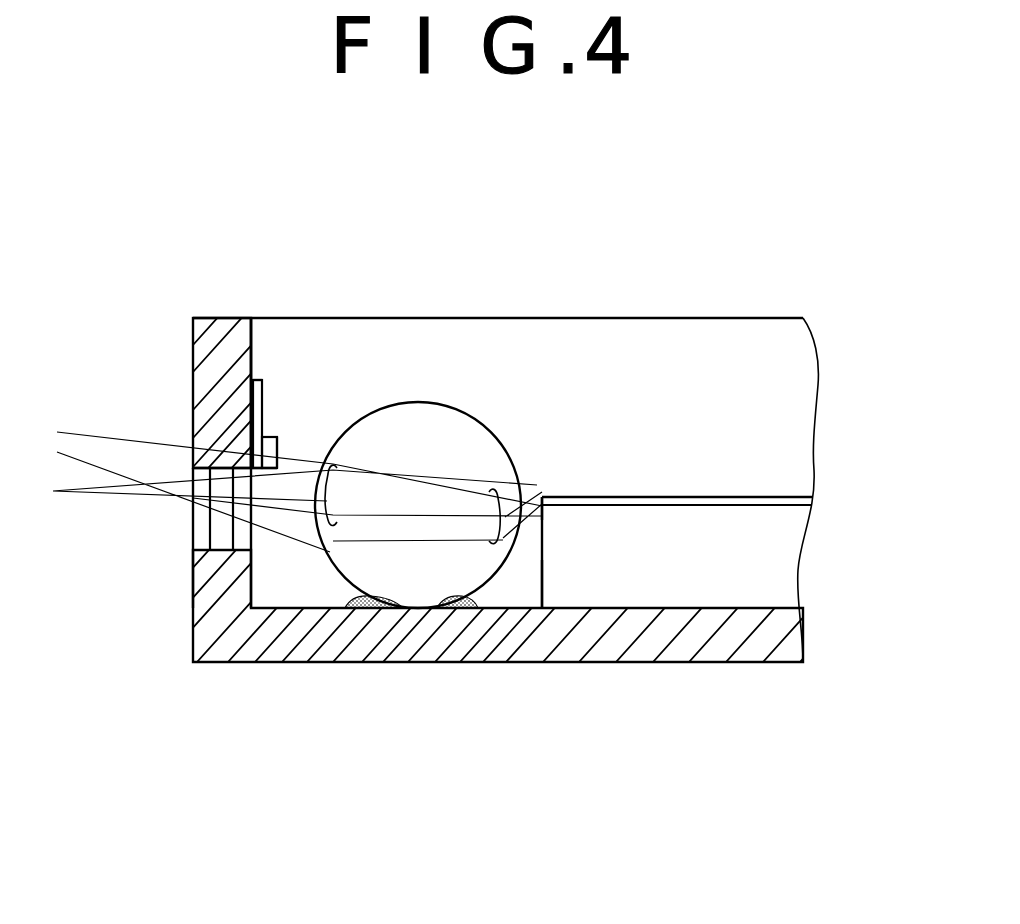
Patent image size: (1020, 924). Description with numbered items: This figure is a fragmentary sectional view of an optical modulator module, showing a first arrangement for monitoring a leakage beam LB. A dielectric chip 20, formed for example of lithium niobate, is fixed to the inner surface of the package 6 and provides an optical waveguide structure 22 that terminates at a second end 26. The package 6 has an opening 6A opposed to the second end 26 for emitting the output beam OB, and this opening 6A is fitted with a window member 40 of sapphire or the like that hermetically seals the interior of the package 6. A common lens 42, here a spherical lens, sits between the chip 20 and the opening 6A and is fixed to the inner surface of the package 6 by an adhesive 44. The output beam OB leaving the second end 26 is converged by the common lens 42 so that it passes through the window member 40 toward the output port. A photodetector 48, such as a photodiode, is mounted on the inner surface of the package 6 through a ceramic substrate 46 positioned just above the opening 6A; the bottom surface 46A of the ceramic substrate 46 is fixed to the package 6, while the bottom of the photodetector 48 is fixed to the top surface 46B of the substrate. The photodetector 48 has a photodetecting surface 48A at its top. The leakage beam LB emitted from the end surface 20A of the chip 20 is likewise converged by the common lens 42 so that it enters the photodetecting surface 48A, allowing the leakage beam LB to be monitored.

The package 6 is at (281, 663).
The opening 6A is at (193, 523).
The window member 40 is at (192, 573).
The common lens 42 is at (448, 422).
The adhesive 44 is at (347, 612).
The ceramic substrate 46 is at (257, 380).
The bottom surface of the ceramic substrate 46A is at (256, 392).
The top surface of the ceramic substrate 46B is at (263, 394).
The photodetector 48 is at (272, 436).
The photodetecting surface 48A is at (278, 447).
The dielectric chip 20 is at (782, 557).
The end surface of the chip 20A is at (543, 580).
The optical waveguide structure 22 is at (661, 498).
The second end 26 is at (522, 508).
The output beam OB is at (327, 500).
The leakage beam LB is at (507, 537).